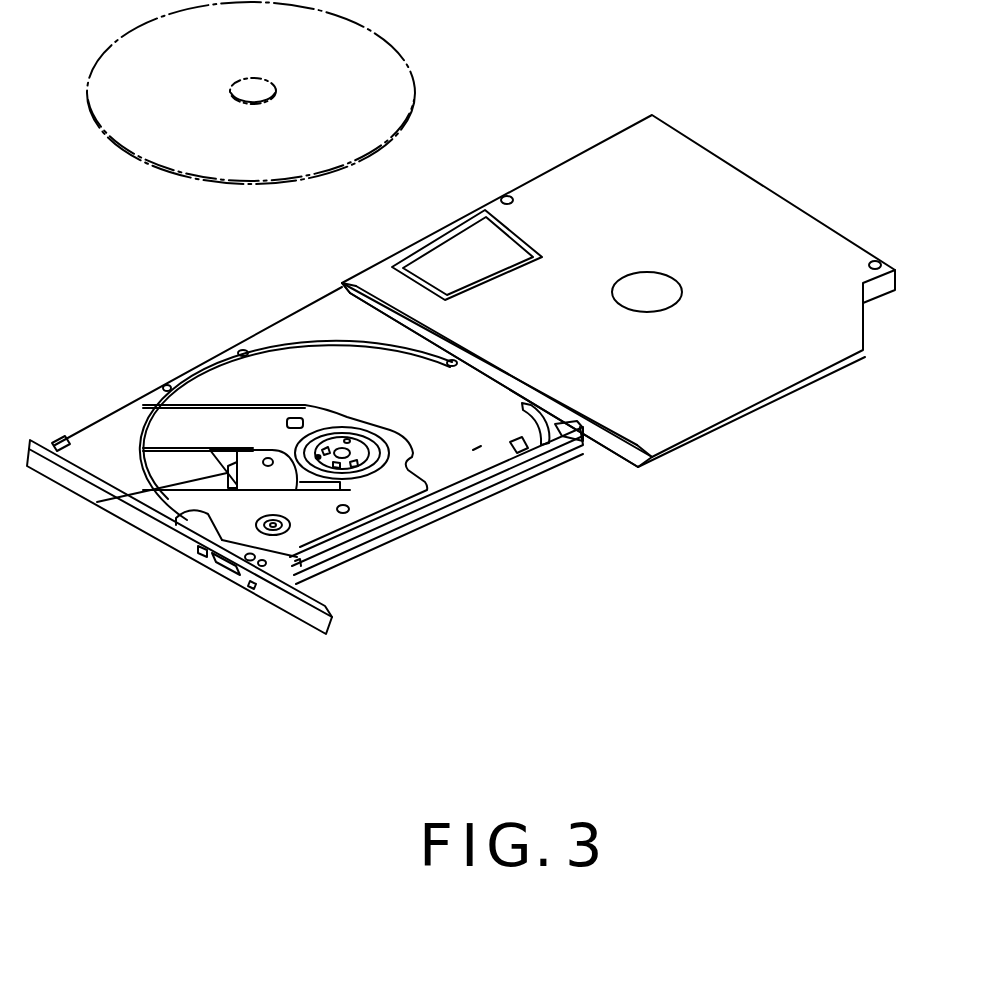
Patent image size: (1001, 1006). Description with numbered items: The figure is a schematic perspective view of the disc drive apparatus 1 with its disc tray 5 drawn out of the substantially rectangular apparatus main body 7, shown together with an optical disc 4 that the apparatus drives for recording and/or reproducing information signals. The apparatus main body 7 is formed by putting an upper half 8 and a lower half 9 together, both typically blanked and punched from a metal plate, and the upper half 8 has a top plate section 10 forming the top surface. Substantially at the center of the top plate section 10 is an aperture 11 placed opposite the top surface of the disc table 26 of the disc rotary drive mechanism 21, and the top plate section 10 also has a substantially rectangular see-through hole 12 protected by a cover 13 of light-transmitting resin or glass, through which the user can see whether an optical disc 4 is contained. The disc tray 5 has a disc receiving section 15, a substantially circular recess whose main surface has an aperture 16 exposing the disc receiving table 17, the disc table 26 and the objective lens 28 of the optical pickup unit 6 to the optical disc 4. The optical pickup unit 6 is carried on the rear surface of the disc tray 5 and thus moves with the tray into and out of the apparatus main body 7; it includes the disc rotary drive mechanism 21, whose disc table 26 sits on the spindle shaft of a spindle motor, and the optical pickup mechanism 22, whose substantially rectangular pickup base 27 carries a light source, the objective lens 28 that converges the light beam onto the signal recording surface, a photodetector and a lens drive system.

The disc drive apparatus 1 is at (110, 341).
The optical disc 4 is at (408, 43).
The disc tray 5 is at (305, 392).
The optical pickup unit 6 is at (248, 460).
The apparatus main body 7 is at (705, 460).
The upper half 8 is at (653, 433).
The lower half 9 is at (586, 443).
The top plate section 10 is at (793, 355).
The aperture 11 is at (669, 280).
The see-through hole 12 is at (487, 230).
The cover 13 is at (442, 265).
The disc receiving section 15 is at (522, 470).
The aperture 16 is at (475, 452).
The disc receiving table 17 is at (367, 503).
The disc rotary drive mechanism 21 is at (318, 458).
The optical pickup mechanism 22 is at (97, 502).
The disc table 26 is at (352, 467).
The pickup base 27 is at (235, 478).
The objective lens 28 is at (268, 468).